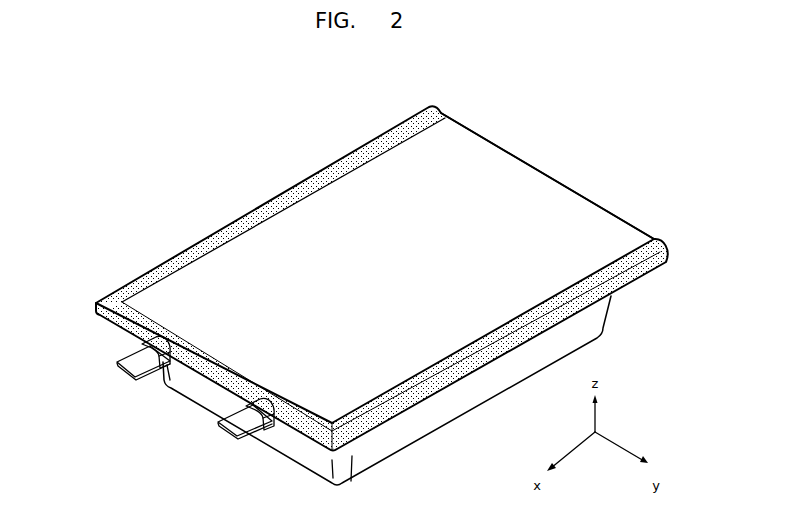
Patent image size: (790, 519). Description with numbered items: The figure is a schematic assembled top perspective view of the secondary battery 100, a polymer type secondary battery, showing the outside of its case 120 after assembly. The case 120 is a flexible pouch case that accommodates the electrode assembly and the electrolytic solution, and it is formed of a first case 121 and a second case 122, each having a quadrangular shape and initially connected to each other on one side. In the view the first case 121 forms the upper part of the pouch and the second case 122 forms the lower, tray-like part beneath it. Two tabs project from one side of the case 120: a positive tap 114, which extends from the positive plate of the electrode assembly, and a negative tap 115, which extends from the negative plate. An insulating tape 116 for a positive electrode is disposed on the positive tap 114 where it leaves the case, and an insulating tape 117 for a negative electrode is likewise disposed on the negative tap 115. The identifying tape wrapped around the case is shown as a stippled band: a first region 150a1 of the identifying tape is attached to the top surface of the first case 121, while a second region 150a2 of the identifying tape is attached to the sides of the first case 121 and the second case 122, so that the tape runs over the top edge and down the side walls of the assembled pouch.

The secondary battery 100 is at (256, 80).
The case 120 is at (553, 150).
The first case 121 is at (490, 172).
The second case 122 is at (411, 437).
The positive tap 114 is at (122, 371).
The negative tap 115 is at (226, 429).
The insulating tape for a positive electrode 116 is at (141, 345).
The insulating tape for a negative electrode 117 is at (270, 424).
The first region of the identifying tape 150a1 is at (640, 250).
The second region of the identifying tape 150a2 is at (632, 276).